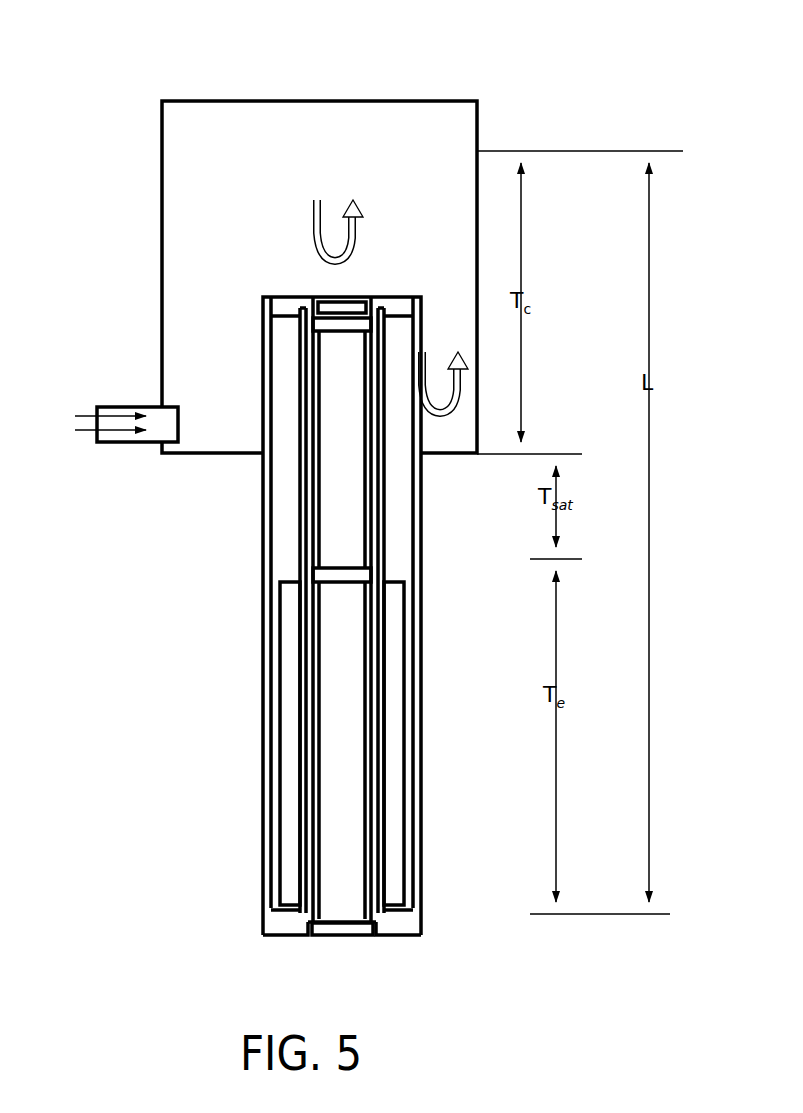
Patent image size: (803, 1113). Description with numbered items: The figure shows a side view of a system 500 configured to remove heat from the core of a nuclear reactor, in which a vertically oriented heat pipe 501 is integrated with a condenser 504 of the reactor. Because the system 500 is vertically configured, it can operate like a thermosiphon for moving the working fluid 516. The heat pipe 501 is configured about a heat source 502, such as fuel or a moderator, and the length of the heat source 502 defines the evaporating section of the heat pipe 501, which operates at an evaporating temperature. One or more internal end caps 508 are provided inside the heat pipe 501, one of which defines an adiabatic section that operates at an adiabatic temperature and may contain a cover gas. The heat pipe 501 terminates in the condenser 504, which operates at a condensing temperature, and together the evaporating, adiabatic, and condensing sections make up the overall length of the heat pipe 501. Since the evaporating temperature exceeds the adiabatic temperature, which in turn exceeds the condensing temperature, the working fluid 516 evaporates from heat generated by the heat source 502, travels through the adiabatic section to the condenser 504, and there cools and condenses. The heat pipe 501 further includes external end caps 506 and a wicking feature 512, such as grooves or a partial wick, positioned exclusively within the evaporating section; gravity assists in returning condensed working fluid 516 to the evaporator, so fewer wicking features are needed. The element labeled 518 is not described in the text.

The system 500 is at (594, 79).
The heat pipe 501 is at (238, 915).
The heat source 502 is at (336, 773).
The condenser 504 is at (143, 233).
The external end caps 506 is at (323, 296).
The internal end caps 508 is at (345, 566).
The wicking feature 512 is at (292, 703).
The working fluid 516 is at (268, 560).
The inlet port 518 is at (148, 446).